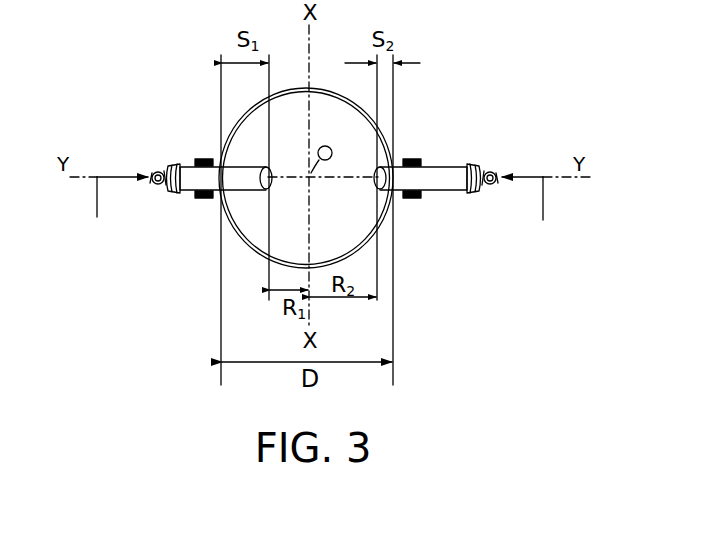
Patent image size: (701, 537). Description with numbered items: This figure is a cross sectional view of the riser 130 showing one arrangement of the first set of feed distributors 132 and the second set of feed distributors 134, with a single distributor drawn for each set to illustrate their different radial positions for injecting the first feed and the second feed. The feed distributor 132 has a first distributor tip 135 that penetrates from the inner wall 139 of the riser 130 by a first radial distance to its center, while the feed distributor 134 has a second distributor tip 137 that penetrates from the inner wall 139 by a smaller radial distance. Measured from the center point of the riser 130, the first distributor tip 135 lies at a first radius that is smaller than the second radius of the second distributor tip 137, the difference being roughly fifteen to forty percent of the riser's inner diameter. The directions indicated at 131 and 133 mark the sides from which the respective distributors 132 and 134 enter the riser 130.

The riser 130 is at (390, 236).
The first force direction 131 is at (94, 200).
The first set of feed distributors 132 is at (195, 163).
The second force direction 133 is at (541, 216).
The second set of feed distributors 134 is at (448, 165).
The first distributor tip 135 is at (271, 187).
The second distributor tip 137 is at (376, 187).
The inner wall 139 is at (237, 232).